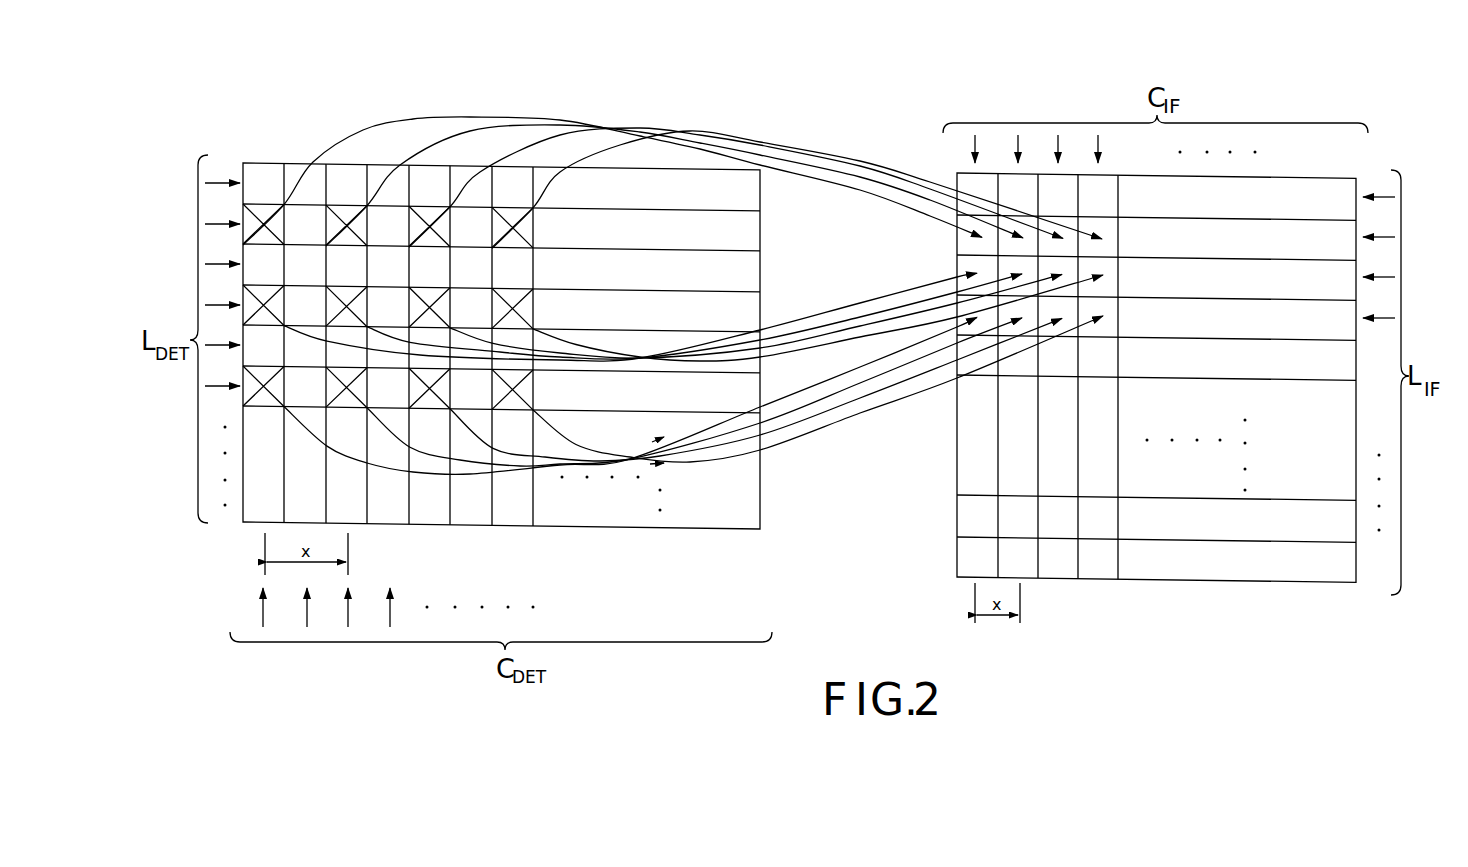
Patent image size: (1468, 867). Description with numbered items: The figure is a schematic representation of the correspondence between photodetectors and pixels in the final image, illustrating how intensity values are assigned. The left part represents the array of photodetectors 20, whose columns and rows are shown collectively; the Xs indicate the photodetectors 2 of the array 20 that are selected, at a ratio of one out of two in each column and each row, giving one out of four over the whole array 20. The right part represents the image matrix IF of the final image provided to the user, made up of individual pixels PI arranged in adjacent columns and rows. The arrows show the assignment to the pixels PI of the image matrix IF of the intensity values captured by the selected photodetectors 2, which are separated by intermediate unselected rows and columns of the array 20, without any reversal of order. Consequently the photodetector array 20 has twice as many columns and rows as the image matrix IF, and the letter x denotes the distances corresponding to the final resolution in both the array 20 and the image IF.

The photodetectors 2 is at (438, 177).
The array of photodetectors 20 is at (270, 162).
The image matrix IF is at (1156, 413).
The pixels PI is at (1025, 553).